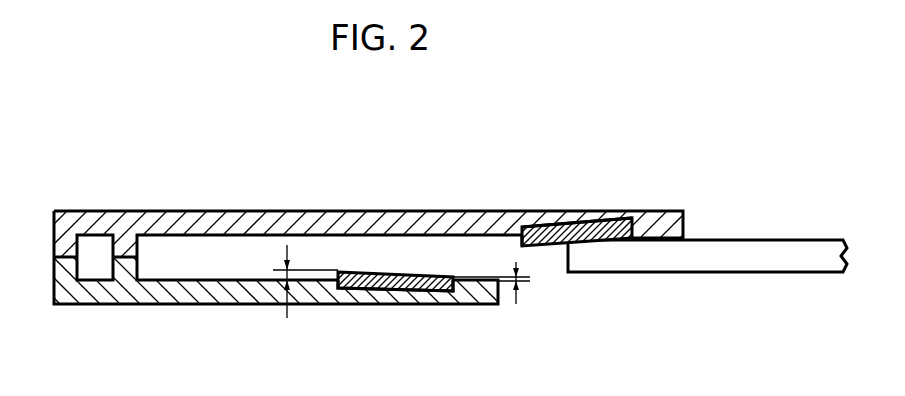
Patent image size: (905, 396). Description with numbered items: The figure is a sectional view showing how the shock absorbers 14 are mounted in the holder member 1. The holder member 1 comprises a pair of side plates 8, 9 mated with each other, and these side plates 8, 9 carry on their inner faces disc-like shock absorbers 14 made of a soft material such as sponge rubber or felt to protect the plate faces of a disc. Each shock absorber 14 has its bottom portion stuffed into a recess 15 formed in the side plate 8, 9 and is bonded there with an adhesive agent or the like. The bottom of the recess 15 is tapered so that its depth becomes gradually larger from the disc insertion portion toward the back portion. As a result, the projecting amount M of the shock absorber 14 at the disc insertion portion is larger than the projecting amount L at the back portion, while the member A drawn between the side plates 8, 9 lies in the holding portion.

The holder member 1 is at (370, 258).
The side plate 8 is at (273, 217).
The side plate 9 is at (213, 293).
The shock absorber 14 is at (410, 273).
The recess 15 is at (565, 225).
The inserted member A is at (758, 265).
The projecting amount in the disc insertion portion M is at (285, 308).
The projecting amount in the back portion L is at (520, 283).